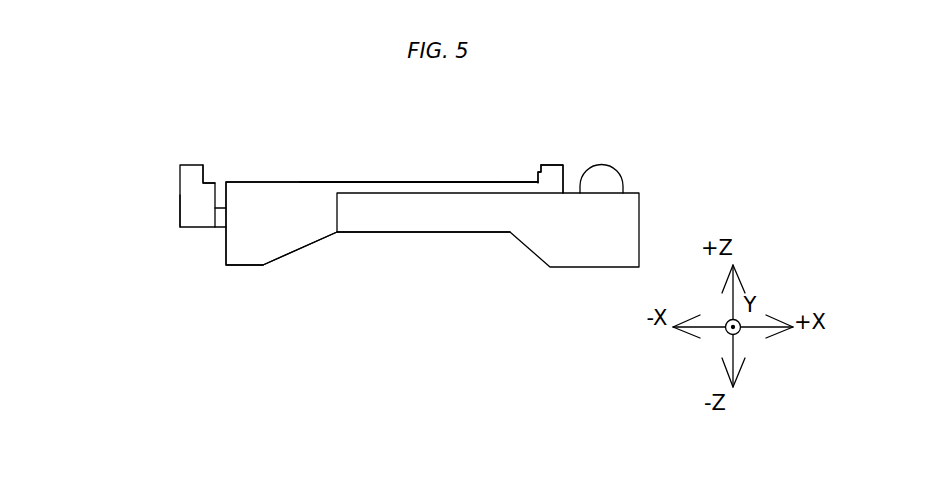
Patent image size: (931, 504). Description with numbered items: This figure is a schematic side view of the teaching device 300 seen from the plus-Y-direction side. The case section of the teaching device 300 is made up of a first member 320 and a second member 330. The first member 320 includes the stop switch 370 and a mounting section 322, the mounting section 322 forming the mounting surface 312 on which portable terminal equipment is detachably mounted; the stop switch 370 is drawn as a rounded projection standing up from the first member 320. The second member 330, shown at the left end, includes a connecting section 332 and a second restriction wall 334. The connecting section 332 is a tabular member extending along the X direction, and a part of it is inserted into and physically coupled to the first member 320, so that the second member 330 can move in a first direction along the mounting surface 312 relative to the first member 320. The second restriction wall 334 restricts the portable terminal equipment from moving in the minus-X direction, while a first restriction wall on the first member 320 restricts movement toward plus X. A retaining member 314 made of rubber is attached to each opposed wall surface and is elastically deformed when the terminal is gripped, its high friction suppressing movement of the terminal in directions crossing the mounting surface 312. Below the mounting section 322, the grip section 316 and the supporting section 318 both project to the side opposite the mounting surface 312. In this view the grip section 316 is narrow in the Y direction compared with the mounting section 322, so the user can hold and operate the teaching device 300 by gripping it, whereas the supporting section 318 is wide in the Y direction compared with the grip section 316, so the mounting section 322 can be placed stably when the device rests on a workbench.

The teaching device 300 is at (699, 149).
The mounting surface 312 is at (377, 180).
The retaining member 314 is at (207, 170).
The grip section 316 is at (435, 218).
The supporting section 318 is at (280, 259).
The first member 320 is at (399, 142).
The mounting section 322 is at (370, 185).
The second member 330 is at (140, 147).
The connecting section 332 is at (222, 229).
The second restriction wall 334 is at (180, 218).
The stop switch 370 is at (595, 162).